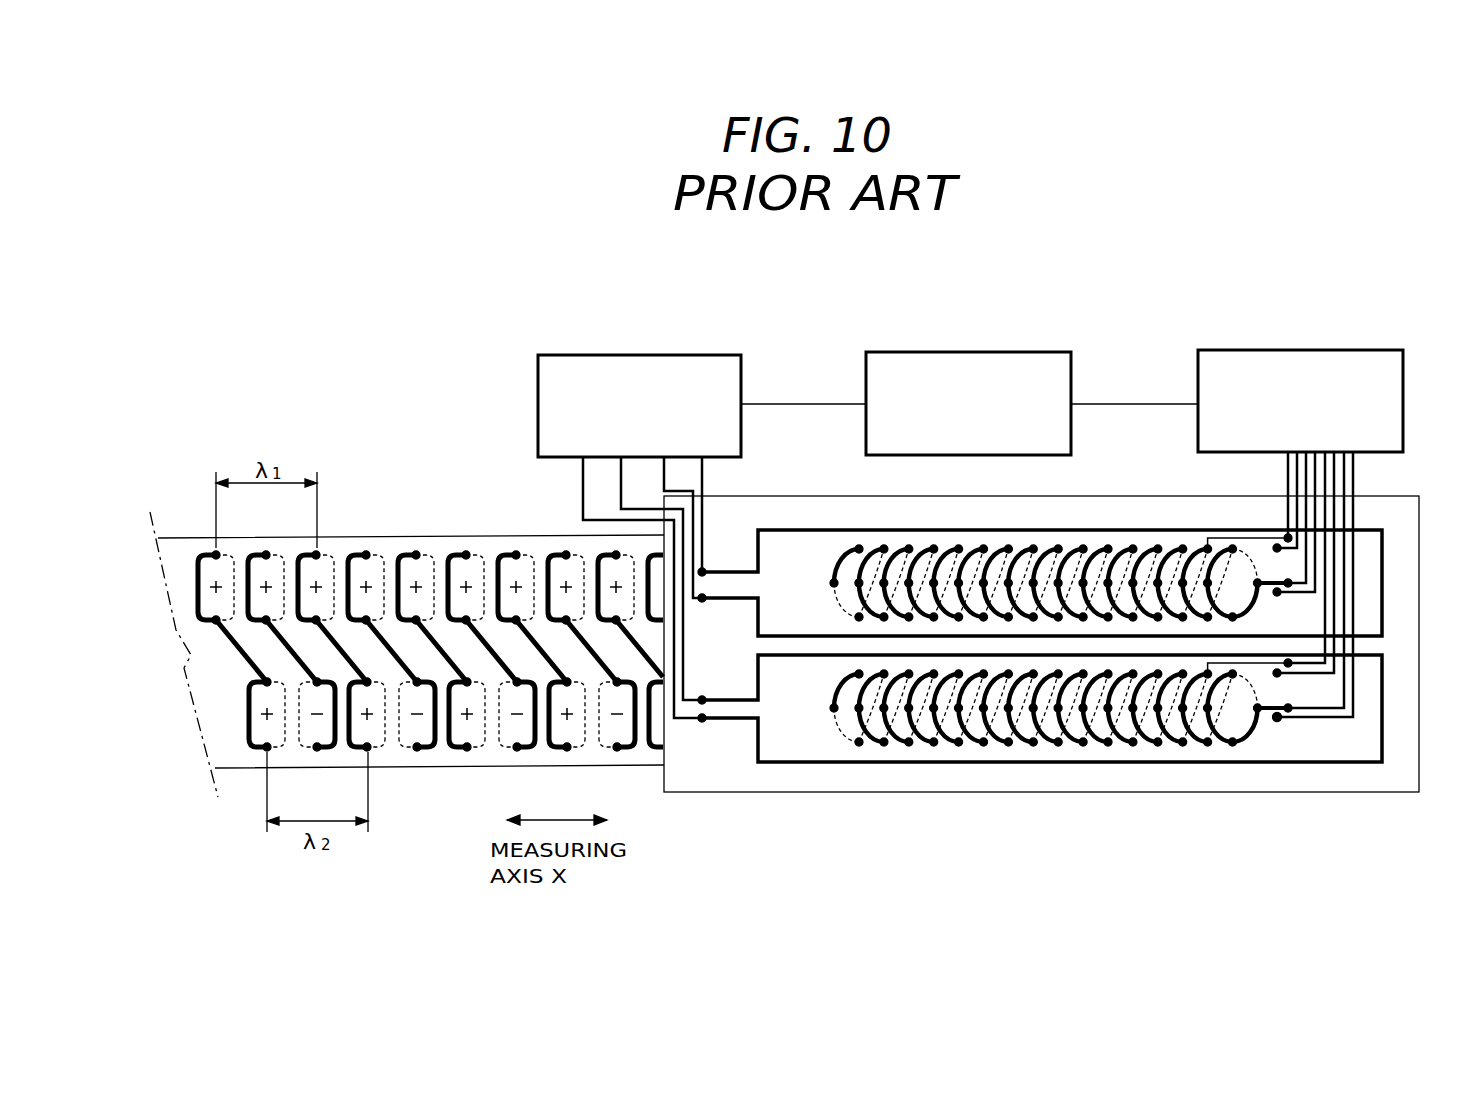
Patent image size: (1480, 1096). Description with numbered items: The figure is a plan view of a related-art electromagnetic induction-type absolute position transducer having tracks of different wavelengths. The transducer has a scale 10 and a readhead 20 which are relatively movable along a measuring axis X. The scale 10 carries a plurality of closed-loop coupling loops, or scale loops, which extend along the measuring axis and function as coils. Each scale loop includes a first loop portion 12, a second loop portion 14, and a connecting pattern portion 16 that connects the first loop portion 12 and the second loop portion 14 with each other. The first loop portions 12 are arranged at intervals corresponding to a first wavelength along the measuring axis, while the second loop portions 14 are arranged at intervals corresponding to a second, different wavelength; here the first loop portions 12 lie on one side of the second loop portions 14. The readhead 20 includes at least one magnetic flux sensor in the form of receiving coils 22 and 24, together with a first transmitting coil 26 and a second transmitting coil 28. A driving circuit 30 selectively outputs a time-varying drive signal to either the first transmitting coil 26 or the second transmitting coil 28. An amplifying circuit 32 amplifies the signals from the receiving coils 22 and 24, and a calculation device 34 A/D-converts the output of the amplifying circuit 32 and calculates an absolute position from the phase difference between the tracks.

The scale 10 is at (407, 660).
The first loop portion 12 is at (305, 548).
The second loop portion 14 is at (362, 752).
The connecting pattern portion 16 is at (238, 648).
The readhead 20 is at (1420, 509).
The receiving coil 22 is at (1107, 545).
The receiving coil 24 is at (1267, 726).
The first transmitting coil 26 is at (1083, 544).
The second transmitting coil 28 is at (1083, 648).
The driving circuit 30 is at (683, 355).
The amplifying circuit 32 is at (1347, 350).
The calculation device 34 is at (1005, 352).